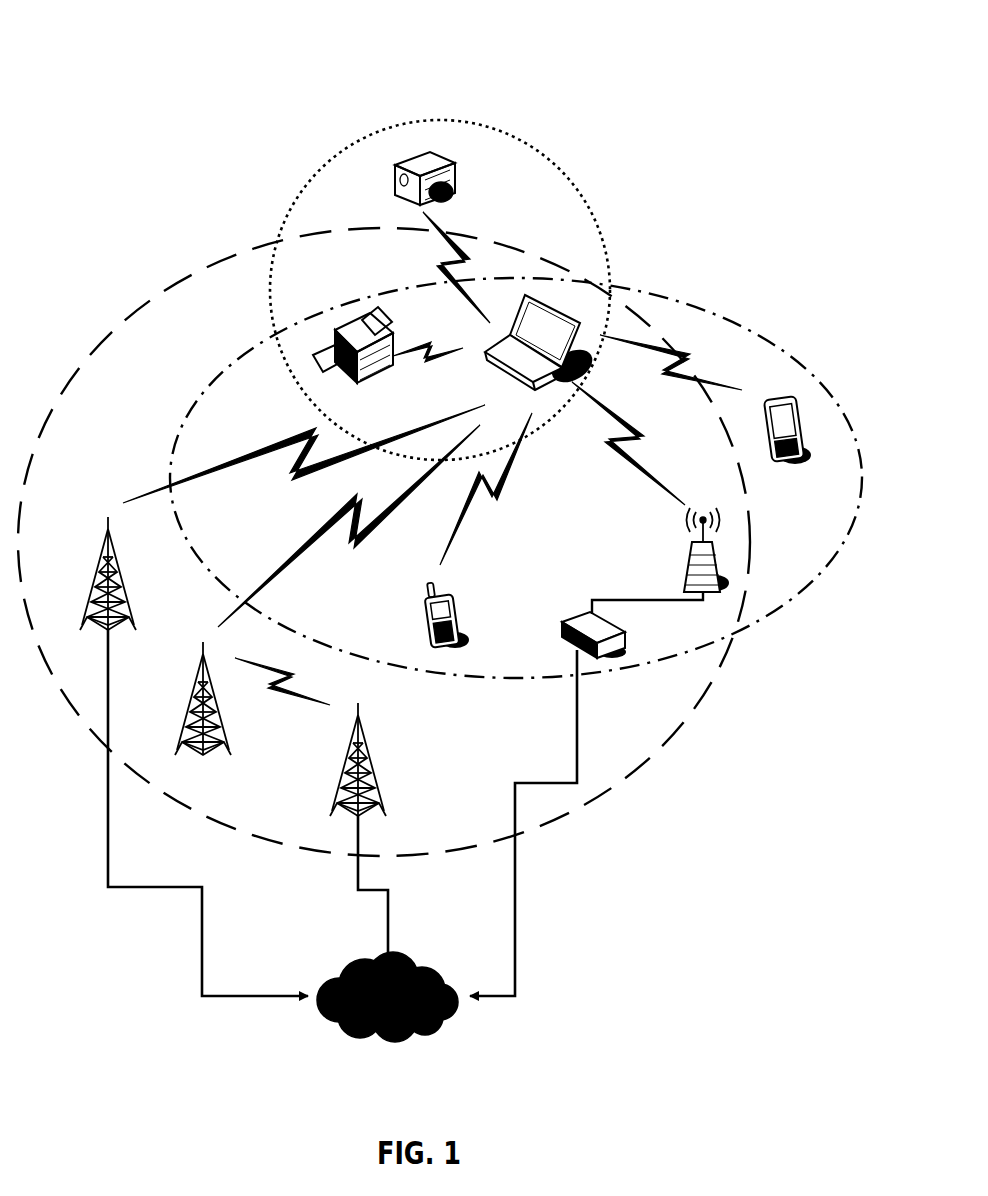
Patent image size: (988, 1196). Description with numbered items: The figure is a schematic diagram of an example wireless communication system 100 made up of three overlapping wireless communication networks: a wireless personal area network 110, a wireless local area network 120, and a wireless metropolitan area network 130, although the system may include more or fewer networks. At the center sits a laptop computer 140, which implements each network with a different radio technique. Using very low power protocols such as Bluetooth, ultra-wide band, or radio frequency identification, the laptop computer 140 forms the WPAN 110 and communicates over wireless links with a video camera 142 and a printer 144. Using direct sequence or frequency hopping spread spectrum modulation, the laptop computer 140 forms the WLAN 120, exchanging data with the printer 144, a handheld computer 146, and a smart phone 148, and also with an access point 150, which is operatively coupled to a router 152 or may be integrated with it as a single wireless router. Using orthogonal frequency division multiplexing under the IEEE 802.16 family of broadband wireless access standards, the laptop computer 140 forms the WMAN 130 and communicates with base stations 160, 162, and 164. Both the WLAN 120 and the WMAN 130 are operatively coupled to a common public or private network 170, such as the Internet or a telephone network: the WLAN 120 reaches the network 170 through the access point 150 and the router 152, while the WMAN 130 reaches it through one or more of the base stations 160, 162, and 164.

The wireless communication system 100 is at (110, 48).
The wireless personal area network 110 is at (438, 118).
The wireless local area network 120 is at (171, 464).
The wireless metropolitan area network 130 is at (200, 263).
The laptop computer 140 is at (537, 296).
The video camera 142 is at (437, 185).
The printer 144 is at (363, 382).
The handheld computer 146 is at (780, 395).
The smart phone 148 is at (446, 597).
The access point 150 is at (697, 565).
The router 152 is at (572, 620).
The base station 160 is at (102, 553).
The base station 162 is at (196, 690).
The base station 164 is at (350, 752).
The common public or private network 170 is at (343, 962).